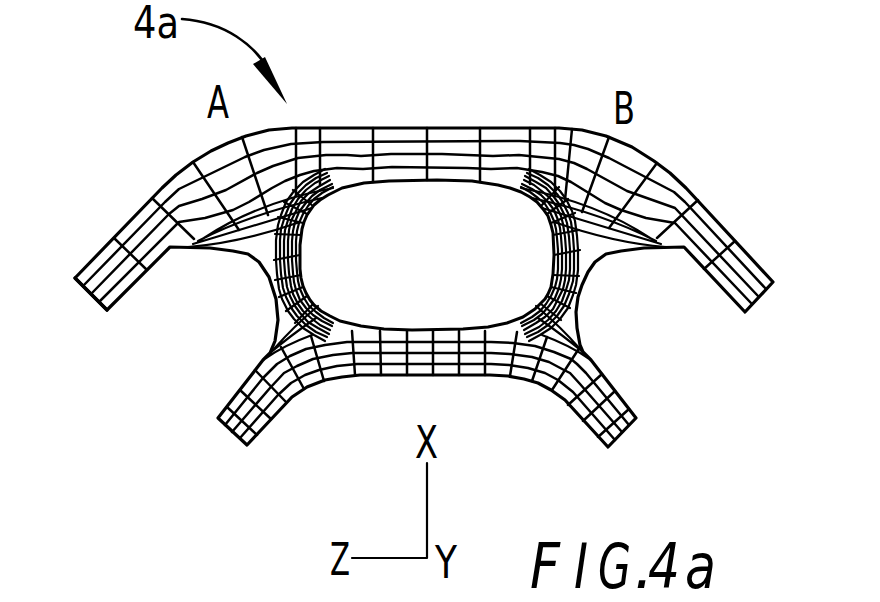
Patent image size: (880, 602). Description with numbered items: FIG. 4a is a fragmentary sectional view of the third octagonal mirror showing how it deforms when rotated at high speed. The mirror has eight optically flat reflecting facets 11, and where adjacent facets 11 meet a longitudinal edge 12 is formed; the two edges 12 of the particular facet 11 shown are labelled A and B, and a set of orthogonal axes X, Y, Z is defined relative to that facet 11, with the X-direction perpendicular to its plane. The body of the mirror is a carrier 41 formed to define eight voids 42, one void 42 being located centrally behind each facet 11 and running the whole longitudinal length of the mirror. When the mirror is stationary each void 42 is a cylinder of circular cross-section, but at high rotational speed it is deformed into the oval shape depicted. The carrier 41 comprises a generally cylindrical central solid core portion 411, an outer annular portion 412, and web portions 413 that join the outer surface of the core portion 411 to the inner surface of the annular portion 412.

The reflecting facet 11 is at (350, 128).
The longitudinal edge 12 is at (225, 140).
The carrier 41 is at (160, 233).
The void 42 is at (467, 230).
The central solid core portion 411 is at (226, 428).
The outer annular portion 412 is at (90, 297).
The web portion 413 is at (583, 303).